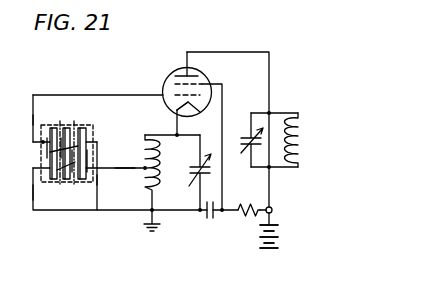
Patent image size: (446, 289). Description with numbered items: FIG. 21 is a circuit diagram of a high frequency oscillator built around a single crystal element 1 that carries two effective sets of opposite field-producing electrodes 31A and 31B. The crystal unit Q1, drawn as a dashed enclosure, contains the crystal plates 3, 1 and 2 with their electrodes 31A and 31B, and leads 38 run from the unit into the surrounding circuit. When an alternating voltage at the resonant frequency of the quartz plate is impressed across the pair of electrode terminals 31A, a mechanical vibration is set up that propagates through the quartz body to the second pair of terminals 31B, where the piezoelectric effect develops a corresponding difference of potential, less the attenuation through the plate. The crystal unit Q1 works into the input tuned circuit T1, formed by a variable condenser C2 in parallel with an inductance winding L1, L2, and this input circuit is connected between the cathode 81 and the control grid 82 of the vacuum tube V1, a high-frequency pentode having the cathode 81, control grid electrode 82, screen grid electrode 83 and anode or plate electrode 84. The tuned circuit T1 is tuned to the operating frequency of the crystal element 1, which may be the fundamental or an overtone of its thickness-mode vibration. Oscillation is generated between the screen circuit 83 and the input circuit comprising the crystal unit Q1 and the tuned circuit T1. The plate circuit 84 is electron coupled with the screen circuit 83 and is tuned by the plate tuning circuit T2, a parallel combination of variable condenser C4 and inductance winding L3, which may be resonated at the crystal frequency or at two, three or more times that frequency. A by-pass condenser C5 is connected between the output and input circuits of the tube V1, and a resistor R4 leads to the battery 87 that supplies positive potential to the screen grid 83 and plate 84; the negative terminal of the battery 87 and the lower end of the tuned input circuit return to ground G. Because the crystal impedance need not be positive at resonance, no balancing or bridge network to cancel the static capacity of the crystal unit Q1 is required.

The crystal element 1 is at (68, 116).
The crystal plate 2 is at (83, 128).
The crystal plate 3 is at (53, 128).
The field-producing electrodes 31A is at (64, 143).
The field-producing electrodes 31B is at (64, 178).
The lead wire 38 is at (32, 118).
The crystal unit Q1 is at (44, 162).
The inductance winding L1 is at (158, 170).
The inductance winding L2 is at (146, 187).
The variable condenser C2 is at (197, 169).
The tuned circuit T1 is at (180, 195).
The ground G is at (281, 254).
The by-pass condenser C5 is at (209, 219).
The resistor R4 is at (248, 215).
The battery 87 is at (278, 231).
The vacuum tube V1 is at (175, 71).
The cathode 81 is at (178, 109).
The control grid electrode 82 is at (199, 109).
The screen grid electrode 83 is at (203, 84).
The plate electrode 84 is at (190, 76).
The tuned circuit T2 is at (271, 142).
The variable condenser C4 is at (244, 139).
The inductance winding L3 is at (301, 145).